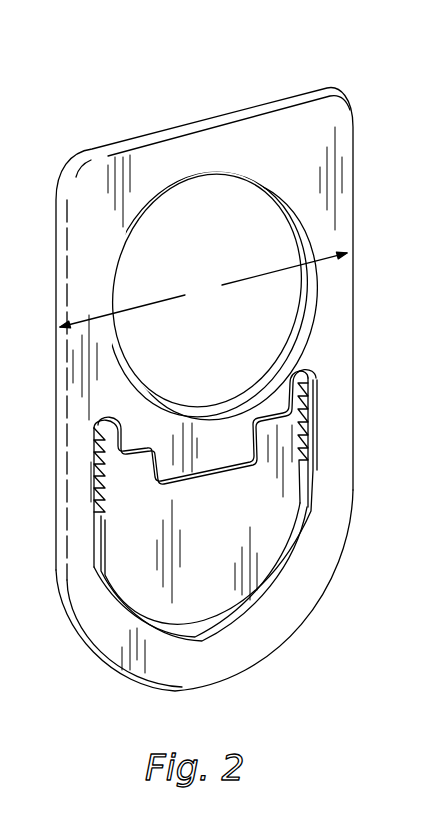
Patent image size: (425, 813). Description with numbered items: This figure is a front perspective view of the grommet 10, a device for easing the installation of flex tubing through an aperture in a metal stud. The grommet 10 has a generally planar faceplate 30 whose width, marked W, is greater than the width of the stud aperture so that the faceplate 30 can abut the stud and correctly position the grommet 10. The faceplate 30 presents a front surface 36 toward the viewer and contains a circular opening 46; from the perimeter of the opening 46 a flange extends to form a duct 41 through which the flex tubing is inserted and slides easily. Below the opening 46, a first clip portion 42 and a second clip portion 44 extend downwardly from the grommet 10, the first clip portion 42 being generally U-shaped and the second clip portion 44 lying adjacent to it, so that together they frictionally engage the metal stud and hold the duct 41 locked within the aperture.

The grommet 10 is at (111, 66).
The faceplate 30 is at (310, 133).
The front surface 36 is at (106, 223).
The duct 41 is at (268, 349).
The first clip portion 42 is at (92, 606).
The second clip portion 44 is at (281, 515).
The opening 46 is at (146, 350).